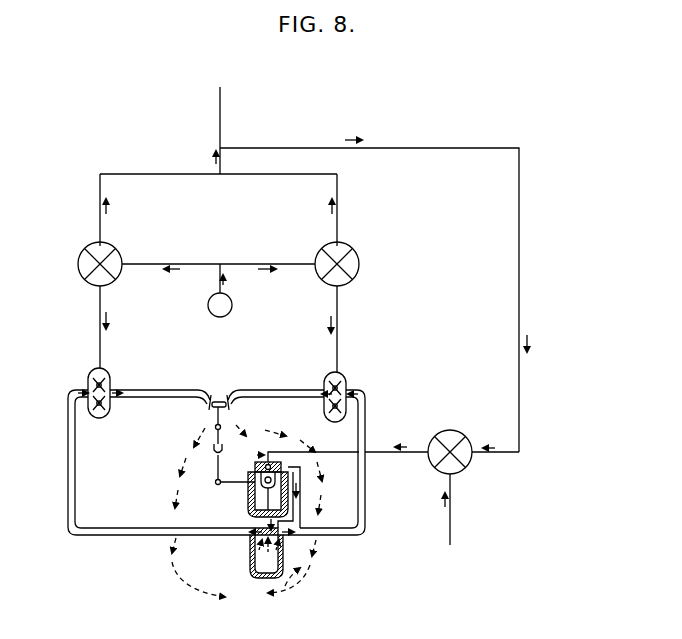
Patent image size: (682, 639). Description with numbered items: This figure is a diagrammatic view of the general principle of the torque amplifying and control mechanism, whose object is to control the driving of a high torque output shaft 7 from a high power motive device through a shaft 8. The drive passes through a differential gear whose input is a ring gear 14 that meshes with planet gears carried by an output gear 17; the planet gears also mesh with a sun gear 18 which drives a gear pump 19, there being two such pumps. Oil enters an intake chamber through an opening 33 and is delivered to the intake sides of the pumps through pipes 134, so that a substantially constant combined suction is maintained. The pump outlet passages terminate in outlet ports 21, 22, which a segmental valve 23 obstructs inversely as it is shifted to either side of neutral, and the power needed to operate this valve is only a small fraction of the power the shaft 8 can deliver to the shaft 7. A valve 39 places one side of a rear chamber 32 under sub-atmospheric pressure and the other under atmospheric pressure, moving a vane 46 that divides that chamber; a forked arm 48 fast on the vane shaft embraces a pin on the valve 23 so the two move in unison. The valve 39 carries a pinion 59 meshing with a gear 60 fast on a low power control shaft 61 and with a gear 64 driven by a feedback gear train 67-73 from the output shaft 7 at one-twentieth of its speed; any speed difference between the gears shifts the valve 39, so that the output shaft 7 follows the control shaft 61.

The high torque output shaft 7 is at (224, 110).
The shaft 8 is at (212, 275).
The ring gear 14 is at (114, 274).
The output gear 17 is at (102, 251).
The sun gear 18 is at (92, 277).
The gear pump 19 is at (108, 381).
The outlet port 21 is at (206, 404).
The outlet port 22 is at (231, 405).
The segmental valve 23 is at (222, 401).
The rear chamber 32 is at (244, 552).
The opening 33 is at (272, 579).
The valve 39 is at (256, 467).
The vane 46 is at (254, 497).
The forked arm 48 is at (214, 482).
The pinion 59 is at (431, 445).
The gear 60 is at (452, 473).
The low power control shaft 61 is at (448, 537).
The gear 64 is at (464, 449).
The feedback gear train 67-73 is at (399, 296).
The pipes 134 is at (72, 541).